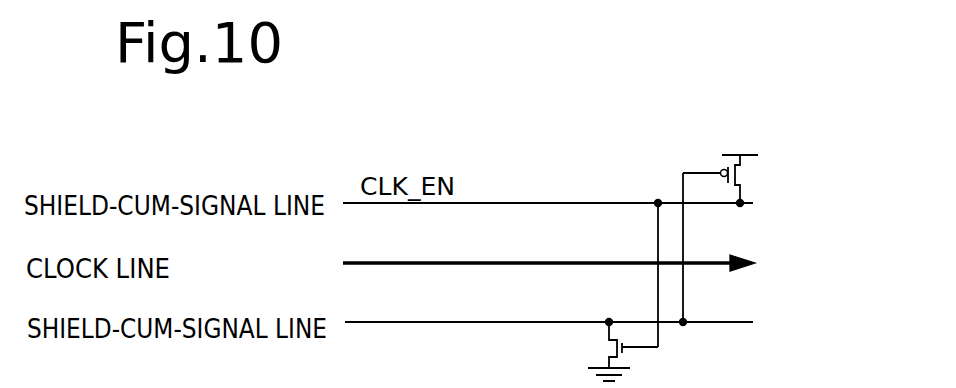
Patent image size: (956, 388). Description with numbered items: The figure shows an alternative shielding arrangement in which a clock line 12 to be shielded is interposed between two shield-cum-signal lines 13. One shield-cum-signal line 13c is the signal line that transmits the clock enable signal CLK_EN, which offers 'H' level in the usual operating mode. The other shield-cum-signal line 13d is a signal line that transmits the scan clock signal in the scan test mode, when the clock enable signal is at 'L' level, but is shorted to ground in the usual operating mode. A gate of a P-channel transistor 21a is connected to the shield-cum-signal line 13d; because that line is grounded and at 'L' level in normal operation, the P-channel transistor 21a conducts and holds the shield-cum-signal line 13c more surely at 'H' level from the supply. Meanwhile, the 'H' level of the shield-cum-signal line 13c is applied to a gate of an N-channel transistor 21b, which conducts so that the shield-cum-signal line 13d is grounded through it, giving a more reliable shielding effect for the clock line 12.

The clock line 12 is at (620, 263).
The shield-cum-signal lines 13 is at (608, 142).
The shield-cum-signal line 13c is at (512, 205).
The shield-cum-signal line 13d is at (562, 322).
The P-channel transistor 21a is at (747, 177).
The N-channel transistor 21b is at (603, 347).